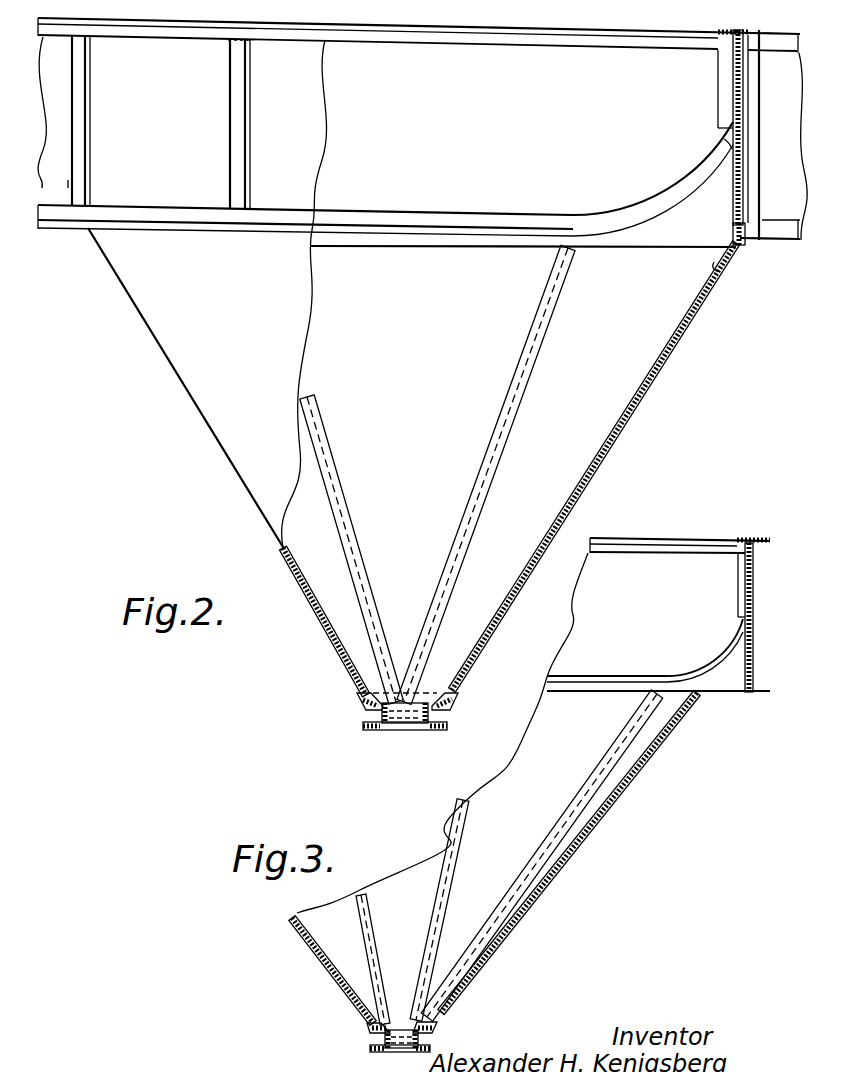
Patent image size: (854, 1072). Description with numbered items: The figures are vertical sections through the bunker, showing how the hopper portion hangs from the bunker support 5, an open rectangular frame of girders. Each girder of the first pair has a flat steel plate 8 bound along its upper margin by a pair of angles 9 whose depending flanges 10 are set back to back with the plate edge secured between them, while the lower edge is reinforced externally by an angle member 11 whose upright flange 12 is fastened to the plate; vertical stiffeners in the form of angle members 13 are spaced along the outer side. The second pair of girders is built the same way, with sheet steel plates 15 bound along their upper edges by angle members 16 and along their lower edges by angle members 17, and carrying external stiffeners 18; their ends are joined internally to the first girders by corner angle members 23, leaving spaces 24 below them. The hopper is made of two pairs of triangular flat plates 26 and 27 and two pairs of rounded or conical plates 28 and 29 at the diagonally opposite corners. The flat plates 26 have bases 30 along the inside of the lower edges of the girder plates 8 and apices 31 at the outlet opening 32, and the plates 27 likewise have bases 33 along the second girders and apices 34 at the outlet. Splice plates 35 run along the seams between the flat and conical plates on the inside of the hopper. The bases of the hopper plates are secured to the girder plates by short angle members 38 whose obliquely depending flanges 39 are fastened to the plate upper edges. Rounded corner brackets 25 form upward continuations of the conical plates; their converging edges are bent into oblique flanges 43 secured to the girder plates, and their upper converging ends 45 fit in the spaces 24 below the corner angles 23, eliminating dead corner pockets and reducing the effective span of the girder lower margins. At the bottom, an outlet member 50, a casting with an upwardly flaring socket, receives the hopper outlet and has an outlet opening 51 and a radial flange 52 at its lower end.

In FIG. 2, the bunker support 5 is at (42, 190).
In FIG. 2, the plate 8 is at (182, 292).
In FIG. 3, the plate 8 is at (481, 733).
In FIG. 2, the angles 9 is at (203, 27).
In FIG. 2, the depending flanges 10 is at (297, 38).
In FIG. 3, the depending flanges 10 is at (712, 553).
In FIG. 2, the angle member 11 is at (180, 220).
In FIG. 2, the upright flange 12 is at (268, 220).
In FIG. 2, the angle members (vertical stiffeners) 13 is at (80, 97).
In FIG. 2, the sheet steel plates 15 is at (736, 195).
In FIG. 3, the sheet steel plates 15 is at (753, 610).
In FIG. 2, the angle members 16 is at (732, 33).
In FIG. 3, the angle members 16 is at (763, 540).
In FIG. 2, the angle members 17 is at (747, 238).
In FIG. 3, the angle members 17 is at (753, 694).
In FIG. 2, the external stiffeners 18 is at (752, 112).
In FIG. 2, the angle members (corner angles) 23 is at (726, 75).
In FIG. 3, the angle members (corner angles) 23 is at (742, 582).
In FIG. 2, the spaces 24 is at (736, 138).
In FIG. 3, the spaces 24 is at (753, 629).
In FIG. 2, the corner brackets 25 is at (673, 243).
In FIG. 3, the corner brackets 25 is at (693, 710).
In FIG. 2, the flat plates 26 is at (417, 372).
In FIG. 3, the flat plates 26 is at (507, 830).
In FIG. 2, the flat plates 27 is at (660, 360).
In FIG. 3, the conical plates 28 is at (355, 953).
In FIG. 2, the conical plates 29 is at (577, 378).
In FIG. 3, the conical plates 29 is at (644, 770).
In FIG. 2, the bases 30 is at (411, 257).
In FIG. 2, the apices 31 is at (403, 652).
In FIG. 2, the outlet opening 32 is at (433, 693).
In FIG. 3, the outlet opening 32 is at (435, 1022).
In FIG. 2, the bases 33 is at (717, 268).
In FIG. 2, the apices 34 is at (362, 678).
In FIG. 2, the splice plates 35 is at (330, 457).
In FIG. 3, the splice plates 35 is at (596, 778).
In FIG. 2, the angle members (bent plates) 38 is at (500, 232).
In FIG. 3, the angle members (bent plates) 38 is at (605, 674).
In FIG. 2, the obliquely depending flanges 39 is at (446, 234).
In FIG. 3, the obliquely depending flanges 39 is at (592, 696).
In FIG. 2, the oblique flanges 43 is at (668, 190).
In FIG. 3, the oblique flanges 43 is at (713, 659).
In FIG. 2, the upper converging ends 45 is at (729, 151).
In FIG. 3, the upper converging ends 45 is at (737, 629).
In FIG. 2, the outlet member 50 is at (380, 712).
In FIG. 3, the outlet member 50 is at (385, 1037).
In FIG. 2, the outlet opening 51 is at (412, 722).
In FIG. 3, the outlet opening 51 is at (388, 1048).
In FIG. 2, the radial flange 52 is at (377, 729).
In FIG. 3, the radial flange 52 is at (432, 1050).